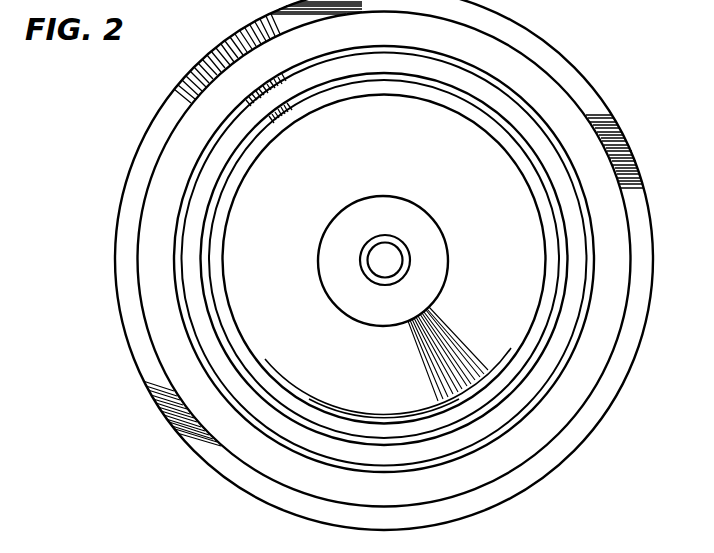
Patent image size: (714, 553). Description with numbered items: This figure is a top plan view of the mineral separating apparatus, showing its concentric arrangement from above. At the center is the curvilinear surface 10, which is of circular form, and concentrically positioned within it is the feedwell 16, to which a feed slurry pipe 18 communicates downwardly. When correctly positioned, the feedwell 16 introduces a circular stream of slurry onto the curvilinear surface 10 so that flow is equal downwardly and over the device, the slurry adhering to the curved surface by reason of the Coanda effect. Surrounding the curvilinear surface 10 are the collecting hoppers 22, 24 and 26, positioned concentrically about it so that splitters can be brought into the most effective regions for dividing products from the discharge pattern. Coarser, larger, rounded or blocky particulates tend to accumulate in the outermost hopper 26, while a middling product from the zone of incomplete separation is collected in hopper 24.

The curvilinear surface 10 is at (300, 352).
The feedwell 16 is at (396, 227).
The feed slurry pipe 18 is at (372, 262).
The collecting hopper 22 is at (418, 91).
The collecting hopper 24 is at (527, 120).
The collecting hopper 26 is at (598, 357).